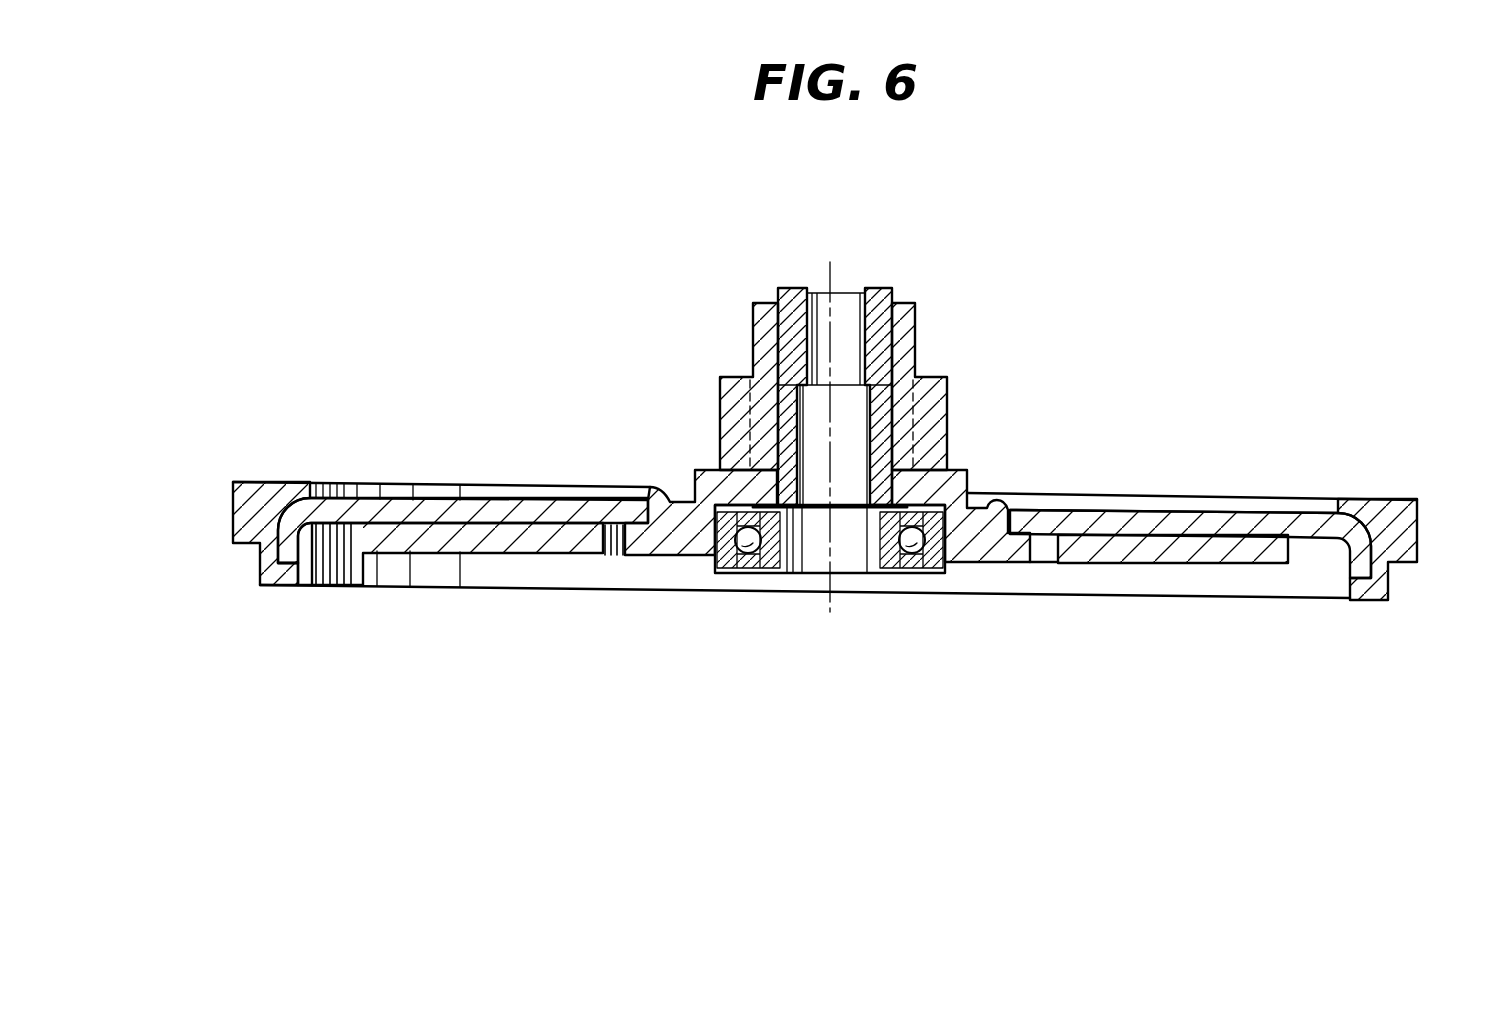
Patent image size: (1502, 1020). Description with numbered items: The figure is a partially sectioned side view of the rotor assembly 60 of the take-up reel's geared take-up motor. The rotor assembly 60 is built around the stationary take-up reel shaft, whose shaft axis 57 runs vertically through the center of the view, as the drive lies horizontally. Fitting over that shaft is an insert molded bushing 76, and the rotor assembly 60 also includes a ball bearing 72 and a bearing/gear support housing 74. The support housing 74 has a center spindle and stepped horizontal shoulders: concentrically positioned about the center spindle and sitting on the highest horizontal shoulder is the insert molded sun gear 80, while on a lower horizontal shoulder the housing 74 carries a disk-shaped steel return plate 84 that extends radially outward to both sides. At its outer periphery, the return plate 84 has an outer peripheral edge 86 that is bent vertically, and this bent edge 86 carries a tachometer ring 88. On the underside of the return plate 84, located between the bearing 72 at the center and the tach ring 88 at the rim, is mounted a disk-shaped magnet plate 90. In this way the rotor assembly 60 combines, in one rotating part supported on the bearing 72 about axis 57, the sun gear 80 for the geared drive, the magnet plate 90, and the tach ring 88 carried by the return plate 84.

The shaft axis 57 is at (836, 272).
The rotor assembly 60 is at (412, 352).
The ball bearing 72 is at (893, 573).
The bearing/gear support housing 74 is at (948, 482).
The insert molded bushing 76 is at (882, 303).
The insert molded sun gear 80 is at (930, 400).
The return plate 84 is at (343, 562).
The outer peripheral edge 86 is at (277, 562).
The tachometer ring 88 is at (255, 518).
The magnet plate 90 is at (1145, 553).